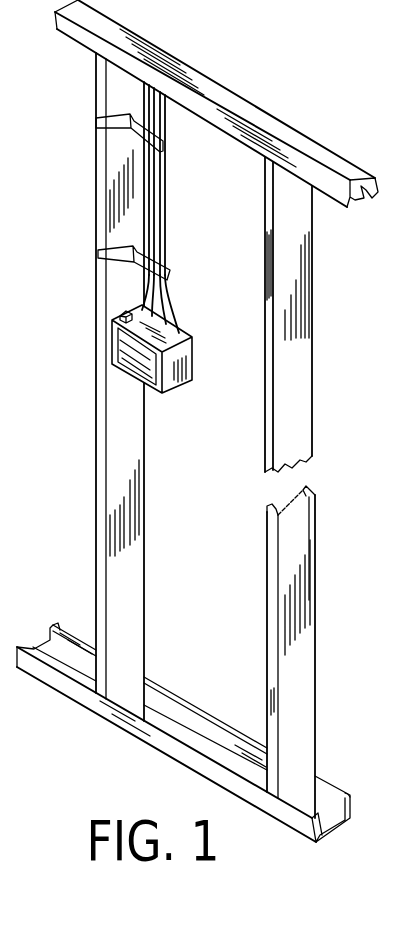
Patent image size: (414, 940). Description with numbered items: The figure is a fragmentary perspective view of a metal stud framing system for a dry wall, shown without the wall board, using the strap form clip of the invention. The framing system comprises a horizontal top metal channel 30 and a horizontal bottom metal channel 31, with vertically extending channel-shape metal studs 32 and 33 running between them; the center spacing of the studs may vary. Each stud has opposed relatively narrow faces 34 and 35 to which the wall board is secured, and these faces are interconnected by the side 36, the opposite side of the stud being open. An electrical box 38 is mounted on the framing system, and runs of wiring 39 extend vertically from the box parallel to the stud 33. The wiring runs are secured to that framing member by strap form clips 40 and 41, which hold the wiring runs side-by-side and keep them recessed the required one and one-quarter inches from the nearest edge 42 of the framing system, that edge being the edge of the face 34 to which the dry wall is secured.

The horizontal top metal channel 30 is at (232, 75).
The horizontal bottom metal channel 31 is at (220, 674).
The channel shape metal stud 32 is at (313, 323).
The channel shape metal stud 33 is at (97, 418).
The face 34 is at (105, 460).
The face 35 is at (312, 492).
The side 36 is at (293, 552).
The electrical box 38 is at (192, 336).
The runs of wiring 39 is at (167, 206).
The strap form clip 40 is at (127, 142).
The strap form clip 41 is at (114, 271).
The nearest edge 42 is at (115, 217).